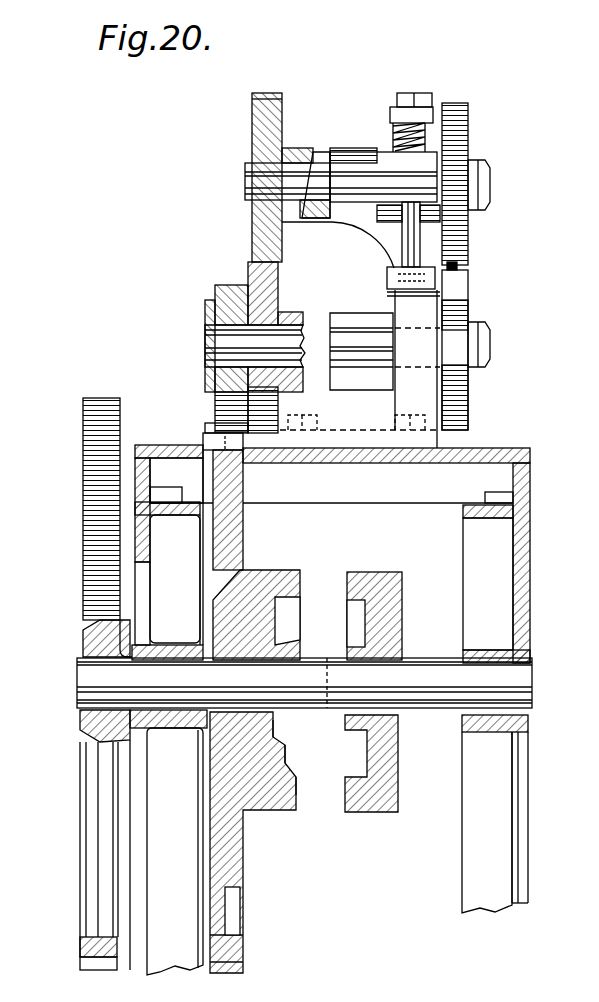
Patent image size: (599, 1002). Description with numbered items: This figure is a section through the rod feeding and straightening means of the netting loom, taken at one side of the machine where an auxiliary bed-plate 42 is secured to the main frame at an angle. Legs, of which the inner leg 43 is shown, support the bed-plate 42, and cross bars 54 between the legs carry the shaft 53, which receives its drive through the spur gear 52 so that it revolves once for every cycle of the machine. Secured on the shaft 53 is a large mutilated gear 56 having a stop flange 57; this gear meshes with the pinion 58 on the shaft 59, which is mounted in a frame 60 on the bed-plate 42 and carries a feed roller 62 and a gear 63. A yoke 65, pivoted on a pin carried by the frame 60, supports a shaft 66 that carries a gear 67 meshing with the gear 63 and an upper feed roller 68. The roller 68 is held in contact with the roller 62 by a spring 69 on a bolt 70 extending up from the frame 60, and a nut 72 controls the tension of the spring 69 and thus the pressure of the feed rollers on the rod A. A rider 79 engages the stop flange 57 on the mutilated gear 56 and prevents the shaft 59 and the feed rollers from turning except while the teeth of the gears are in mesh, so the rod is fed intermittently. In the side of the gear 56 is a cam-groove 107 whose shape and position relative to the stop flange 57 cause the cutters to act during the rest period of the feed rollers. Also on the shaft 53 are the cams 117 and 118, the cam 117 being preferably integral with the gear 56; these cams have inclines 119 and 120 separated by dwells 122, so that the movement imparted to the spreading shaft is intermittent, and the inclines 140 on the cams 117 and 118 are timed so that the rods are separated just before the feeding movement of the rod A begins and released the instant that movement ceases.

The auxiliary bed-plate 42 is at (500, 462).
The inner leg 43 is at (540, 610).
The spur gear 52 is at (88, 611).
The shaft 53 is at (424, 680).
The cross bars 54 is at (174, 717).
The mutilated gear 56 is at (240, 525).
The stop flange 57 is at (205, 430).
The pinion 58 is at (228, 296).
The shaft 59 is at (355, 342).
The frame 60 is at (360, 369).
The feed roller 62 is at (458, 306).
The gear 63 is at (272, 291).
The yoke 65 is at (345, 215).
The shaft 66 is at (348, 170).
The gear 67 is at (262, 226).
The feed roller 68 is at (455, 146).
The spring 69 is at (398, 145).
The bolt 70 is at (398, 248).
The nut 72 is at (420, 101).
The rider 79 is at (205, 313).
The rod A is at (460, 267).
The cam-groove 107 is at (233, 917).
The cam 117 is at (250, 800).
The cam 118 is at (388, 808).
The incline 119 is at (342, 765).
The incline 120 is at (340, 716).
The dwell 122 is at (340, 748).
The inclines 140 is at (345, 660).